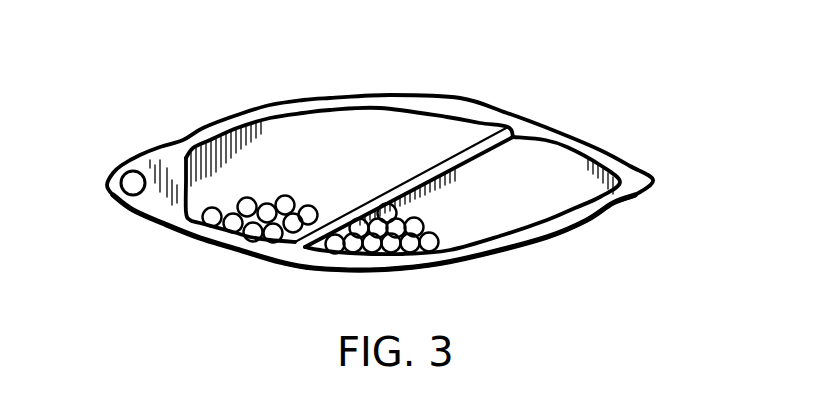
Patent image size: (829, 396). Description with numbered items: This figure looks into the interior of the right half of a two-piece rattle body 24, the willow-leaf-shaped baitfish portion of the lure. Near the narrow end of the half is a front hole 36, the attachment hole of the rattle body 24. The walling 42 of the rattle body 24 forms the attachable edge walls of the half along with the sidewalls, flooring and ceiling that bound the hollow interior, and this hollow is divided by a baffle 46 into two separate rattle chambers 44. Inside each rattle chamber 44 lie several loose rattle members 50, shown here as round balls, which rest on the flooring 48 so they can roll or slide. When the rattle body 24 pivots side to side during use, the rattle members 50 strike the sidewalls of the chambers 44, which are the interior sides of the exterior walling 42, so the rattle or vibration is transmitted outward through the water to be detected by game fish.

The rattle body 24 is at (613, 150).
The front hole 36 is at (132, 181).
The walling 42 is at (402, 100).
The rattle chamber 44 is at (307, 143).
The baffle 46 is at (398, 192).
The flooring 48 is at (523, 227).
The rattle member 50 is at (333, 250).